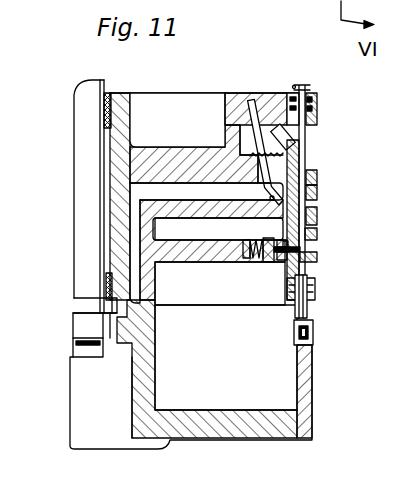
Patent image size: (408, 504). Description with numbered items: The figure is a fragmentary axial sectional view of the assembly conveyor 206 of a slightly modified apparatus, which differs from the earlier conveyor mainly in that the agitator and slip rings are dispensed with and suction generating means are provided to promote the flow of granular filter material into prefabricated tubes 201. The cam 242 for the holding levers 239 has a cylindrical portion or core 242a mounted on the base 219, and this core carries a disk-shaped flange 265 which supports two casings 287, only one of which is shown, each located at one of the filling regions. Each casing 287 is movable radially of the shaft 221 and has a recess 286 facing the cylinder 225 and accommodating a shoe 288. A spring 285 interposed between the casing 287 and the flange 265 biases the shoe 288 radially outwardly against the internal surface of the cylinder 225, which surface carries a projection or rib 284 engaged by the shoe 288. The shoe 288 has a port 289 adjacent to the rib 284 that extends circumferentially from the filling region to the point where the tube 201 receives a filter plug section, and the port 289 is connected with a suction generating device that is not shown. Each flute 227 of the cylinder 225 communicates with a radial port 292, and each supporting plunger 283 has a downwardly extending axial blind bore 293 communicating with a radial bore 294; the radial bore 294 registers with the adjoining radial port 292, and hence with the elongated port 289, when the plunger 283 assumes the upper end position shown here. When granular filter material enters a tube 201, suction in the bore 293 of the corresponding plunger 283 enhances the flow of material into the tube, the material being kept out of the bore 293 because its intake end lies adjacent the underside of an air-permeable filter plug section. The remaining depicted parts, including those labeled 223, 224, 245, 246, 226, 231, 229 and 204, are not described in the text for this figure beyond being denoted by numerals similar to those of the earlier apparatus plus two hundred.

The assembly conveyor 206 is at (164, 88).
The shaft 221 is at (88, 92).
The upper chamber 223 is at (145, 160).
The upper block 224 is at (257, 105).
The holding lever 239 is at (260, 166).
The roller 246 is at (300, 141).
The actuating rod 245 is at (304, 131).
The cam 242 is at (166, 209).
The cylindrical portion or core 242a is at (150, 232).
The casing 287 is at (236, 230).
The shoe 288 is at (277, 241).
The disk-shaped flange 265 is at (182, 250).
The base 219 is at (178, 412).
The spring 285 is at (251, 245).
The recess 286 is at (275, 262).
The cylinder 225 is at (300, 212).
The prefabricated tube 201 is at (307, 182).
The bushing 226 is at (308, 193).
The flute 227 is at (305, 233).
The axial blind bore 293 is at (350, 236).
The projection or rib 284 is at (309, 246).
The port 289 is at (309, 249).
The radial bore 294 is at (309, 251).
The radial port 292 is at (311, 253).
The supporting plunger 283 is at (316, 300).
The plunger 231 is at (308, 316).
The stop 229 is at (309, 340).
The housing wall 204 is at (309, 374).